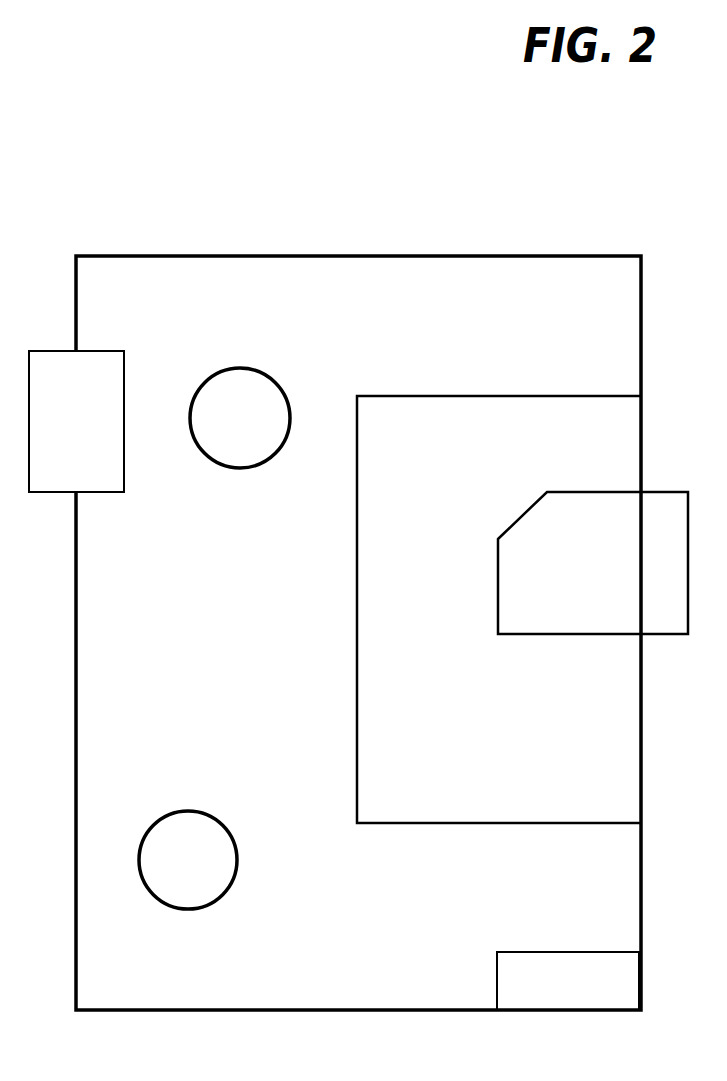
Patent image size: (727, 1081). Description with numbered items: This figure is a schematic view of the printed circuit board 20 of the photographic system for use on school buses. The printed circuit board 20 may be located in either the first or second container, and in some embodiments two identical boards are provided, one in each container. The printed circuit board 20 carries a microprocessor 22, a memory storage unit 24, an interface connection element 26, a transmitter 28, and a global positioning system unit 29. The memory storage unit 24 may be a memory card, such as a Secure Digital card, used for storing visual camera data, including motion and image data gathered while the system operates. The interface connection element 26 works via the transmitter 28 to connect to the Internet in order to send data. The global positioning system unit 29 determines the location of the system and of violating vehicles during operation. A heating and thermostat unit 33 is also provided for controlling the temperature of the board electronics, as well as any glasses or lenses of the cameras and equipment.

The printed circuit board 20 is at (186, 736).
The microprocessor 22 is at (436, 726).
The memory storage unit 24 is at (548, 599).
The interface connection element 26 is at (61, 459).
The transmitter 28 is at (169, 874).
The global positioning system (GPS) unit 29 is at (224, 433).
The heating and thermostat unit 33 is at (544, 994).